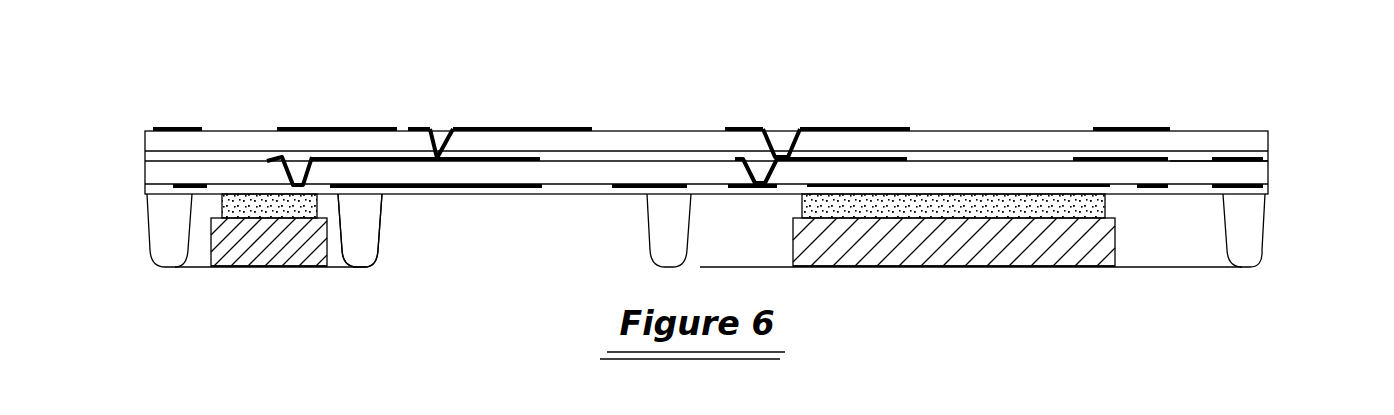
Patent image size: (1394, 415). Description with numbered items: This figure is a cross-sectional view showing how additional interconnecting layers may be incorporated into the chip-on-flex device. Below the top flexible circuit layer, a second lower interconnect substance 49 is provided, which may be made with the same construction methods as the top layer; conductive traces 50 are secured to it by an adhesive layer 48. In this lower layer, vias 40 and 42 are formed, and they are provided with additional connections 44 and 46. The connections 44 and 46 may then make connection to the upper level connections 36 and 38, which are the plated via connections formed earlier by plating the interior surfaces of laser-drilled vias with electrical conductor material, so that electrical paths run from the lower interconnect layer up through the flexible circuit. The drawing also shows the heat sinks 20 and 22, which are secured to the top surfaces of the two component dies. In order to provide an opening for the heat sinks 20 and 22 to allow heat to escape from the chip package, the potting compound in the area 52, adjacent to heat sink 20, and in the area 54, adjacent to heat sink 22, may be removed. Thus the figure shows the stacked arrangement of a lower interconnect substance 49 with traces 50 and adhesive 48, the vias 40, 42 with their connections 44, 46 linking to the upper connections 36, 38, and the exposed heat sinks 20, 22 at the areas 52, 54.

The heat sink 20 is at (302, 255).
The heat sink 22 is at (878, 242).
The electrical connection 36 is at (380, 217).
The electrical connection 38 is at (647, 225).
The via 40 is at (303, 150).
The via 42 is at (740, 157).
The connection 44 is at (373, 158).
The connection 46 is at (797, 112).
The adhesive layer 48 is at (1265, 159).
The second lower interconnect substance 49 is at (1258, 173).
The conductive traces 50 is at (1230, 161).
The area 52 is at (218, 267).
The area 54 is at (1063, 267).